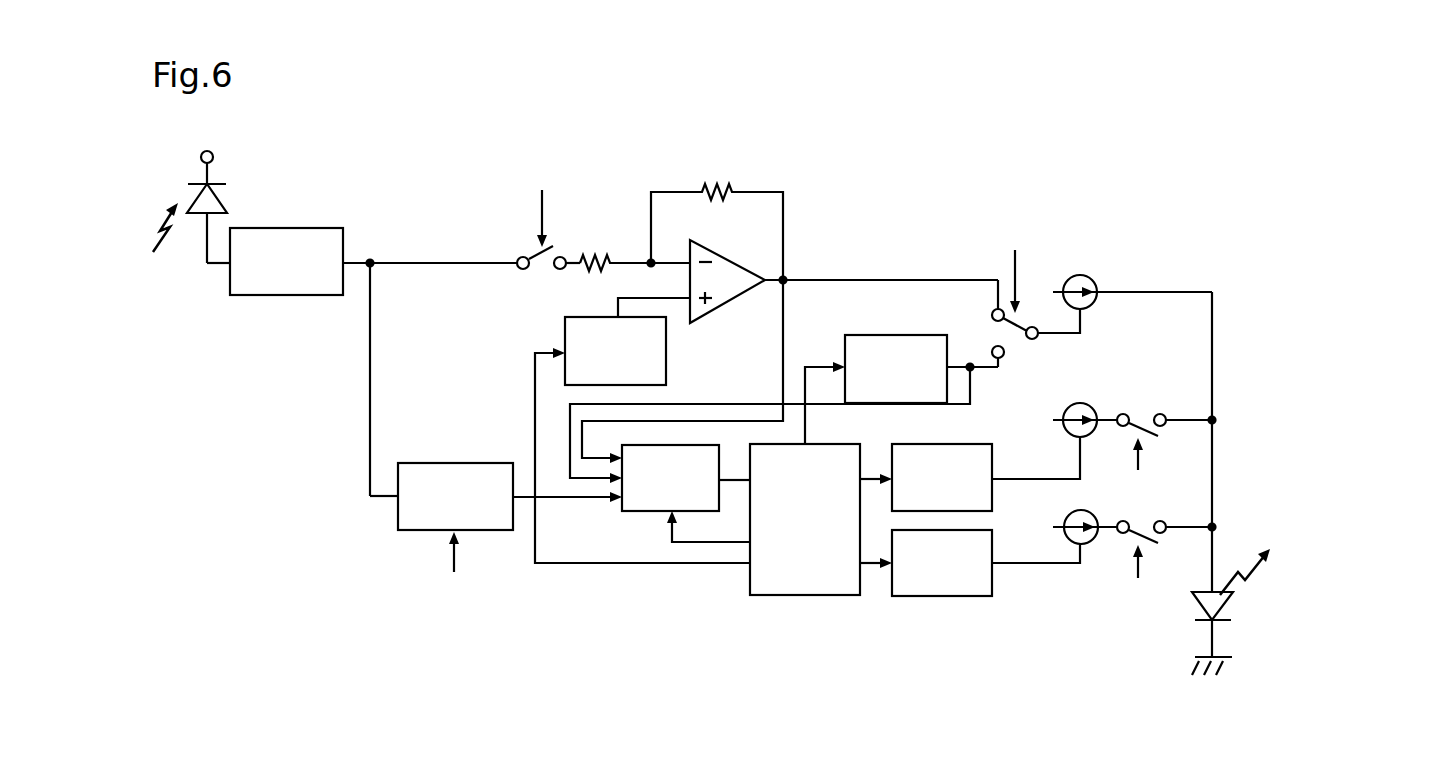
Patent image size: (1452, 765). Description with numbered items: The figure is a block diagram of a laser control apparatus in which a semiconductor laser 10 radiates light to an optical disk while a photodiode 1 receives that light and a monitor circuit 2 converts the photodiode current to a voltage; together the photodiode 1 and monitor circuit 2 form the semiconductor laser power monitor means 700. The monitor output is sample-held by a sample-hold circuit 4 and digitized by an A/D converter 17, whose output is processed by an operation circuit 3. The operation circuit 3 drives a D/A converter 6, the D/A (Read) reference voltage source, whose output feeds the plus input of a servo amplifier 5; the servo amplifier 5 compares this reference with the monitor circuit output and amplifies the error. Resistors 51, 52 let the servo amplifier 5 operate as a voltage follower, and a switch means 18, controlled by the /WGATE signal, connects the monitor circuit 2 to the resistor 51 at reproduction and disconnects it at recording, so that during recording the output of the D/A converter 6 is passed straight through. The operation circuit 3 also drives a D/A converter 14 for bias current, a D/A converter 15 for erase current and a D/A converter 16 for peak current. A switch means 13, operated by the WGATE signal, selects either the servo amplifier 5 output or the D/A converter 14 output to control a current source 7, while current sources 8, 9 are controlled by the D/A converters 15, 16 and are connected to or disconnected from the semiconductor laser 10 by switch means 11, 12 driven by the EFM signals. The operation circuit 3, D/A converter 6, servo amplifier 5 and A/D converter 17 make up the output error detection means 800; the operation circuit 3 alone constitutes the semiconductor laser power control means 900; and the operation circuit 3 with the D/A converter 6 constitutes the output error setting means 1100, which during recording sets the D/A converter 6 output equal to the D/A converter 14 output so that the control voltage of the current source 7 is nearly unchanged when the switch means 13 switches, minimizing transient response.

The photodiode 1 is at (228, 192).
The monitor circuit 2 is at (303, 296).
The operation circuit 3 is at (820, 597).
The sample-hold circuit 4 is at (450, 462).
The servo amplifier 5 is at (718, 253).
The D/A converter 6 is at (565, 333).
The current source 7 is at (1093, 278).
The current source 8 is at (1090, 401).
The current source 9 is at (1095, 545).
The semiconductor laser 10 is at (1228, 605).
The switch means 11 is at (1147, 407).
The switch means 12 is at (1143, 515).
The switch means 13 is at (1013, 345).
The D/A converter 14 is at (907, 335).
The D/A converter 15 is at (993, 465).
The D/A converter 16 is at (918, 597).
The A/D converter 17 is at (635, 514).
The switch means 18 is at (530, 249).
The resistor 51 is at (600, 250).
The resistor 52 is at (720, 178).
The semiconductor laser power monitor means 700 is at (397, 240).
The output error detection means 800 is at (617, 585).
The semiconductor laser power control means 900 is at (659, 587).
The output error setting means 1100 is at (715, 590).